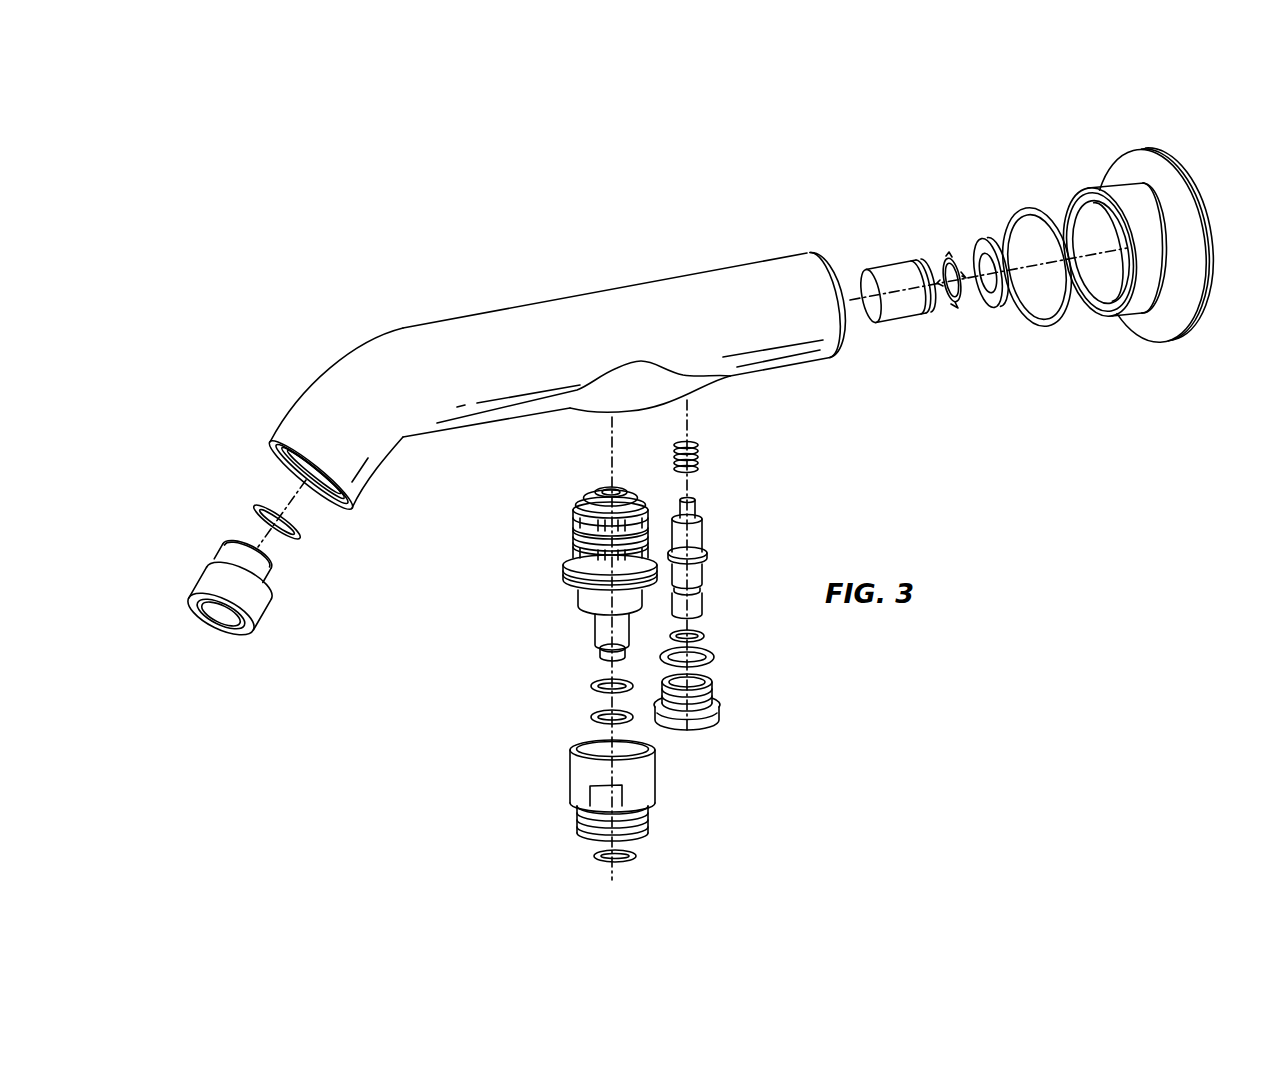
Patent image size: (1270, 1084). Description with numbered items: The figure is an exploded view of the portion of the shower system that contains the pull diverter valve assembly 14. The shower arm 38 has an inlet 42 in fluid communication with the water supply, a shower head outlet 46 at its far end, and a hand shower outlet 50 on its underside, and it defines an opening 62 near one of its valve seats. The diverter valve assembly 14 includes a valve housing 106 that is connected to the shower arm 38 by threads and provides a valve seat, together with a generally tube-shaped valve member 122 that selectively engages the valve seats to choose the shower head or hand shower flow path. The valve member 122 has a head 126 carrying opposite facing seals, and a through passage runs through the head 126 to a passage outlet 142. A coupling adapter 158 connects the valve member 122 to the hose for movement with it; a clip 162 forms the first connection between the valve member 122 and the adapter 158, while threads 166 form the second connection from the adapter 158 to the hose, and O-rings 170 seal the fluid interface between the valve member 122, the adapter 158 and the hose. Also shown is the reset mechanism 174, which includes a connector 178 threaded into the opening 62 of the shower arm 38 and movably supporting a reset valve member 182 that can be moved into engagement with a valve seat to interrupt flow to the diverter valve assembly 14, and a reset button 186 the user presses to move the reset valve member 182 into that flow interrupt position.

The pull diverter valve assembly 14 is at (521, 669).
The shower arm 38 is at (518, 303).
The inlet 42 is at (1206, 131).
The shower head outlet 46 is at (247, 375).
The hand shower outlet 50 is at (578, 427).
The opening 62 is at (705, 408).
The valve housing 106 is at (570, 573).
The valve member 122 is at (593, 629).
The head 126 is at (620, 488).
The passage outlet 142 is at (603, 657).
The coupling adapter 158 is at (570, 782).
The clip 162 is at (623, 867).
The threads 166 is at (650, 817).
The O-rings 170 is at (590, 717).
The reset mechanism 174 is at (824, 698).
The connector 178 is at (712, 700).
The reset valve member 182 is at (700, 515).
The reset button 186 is at (702, 607).